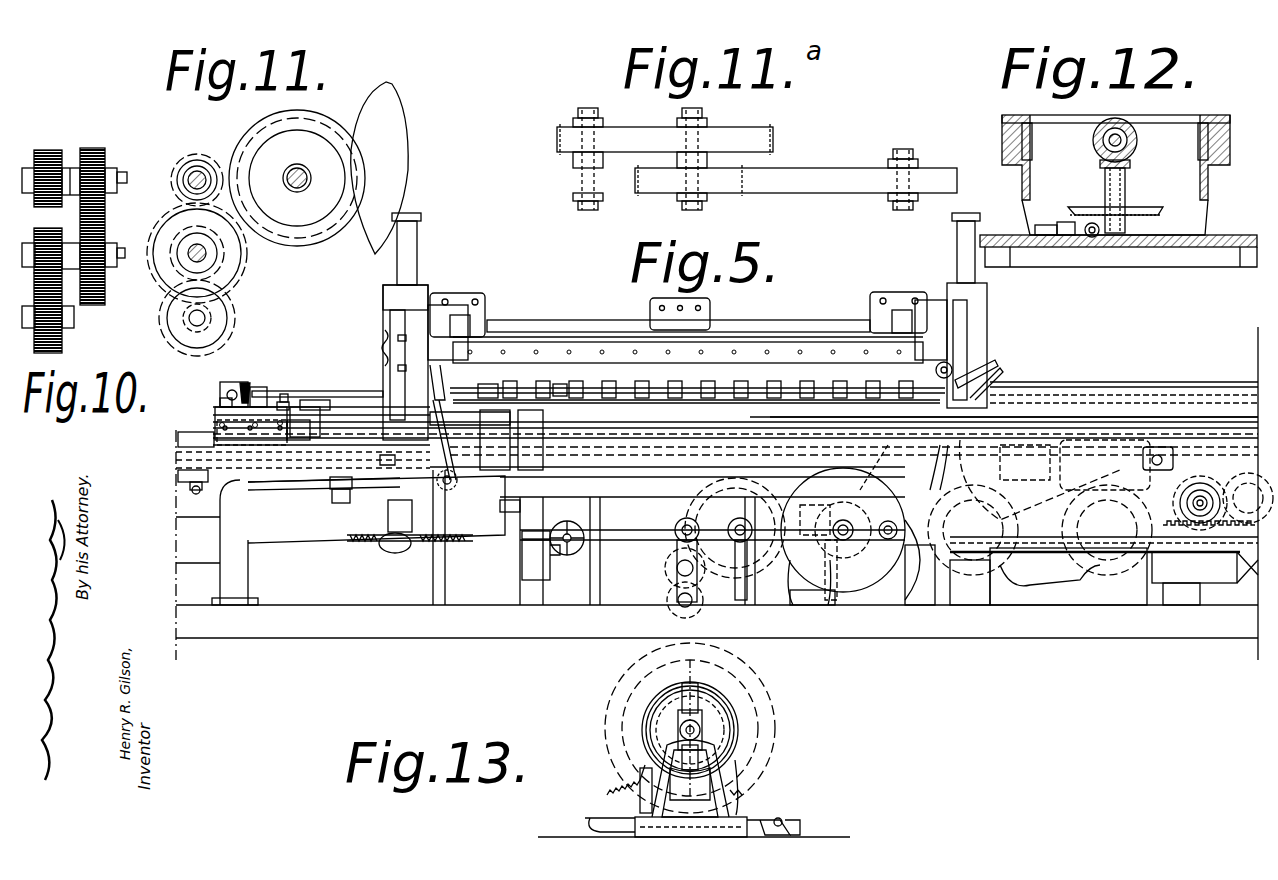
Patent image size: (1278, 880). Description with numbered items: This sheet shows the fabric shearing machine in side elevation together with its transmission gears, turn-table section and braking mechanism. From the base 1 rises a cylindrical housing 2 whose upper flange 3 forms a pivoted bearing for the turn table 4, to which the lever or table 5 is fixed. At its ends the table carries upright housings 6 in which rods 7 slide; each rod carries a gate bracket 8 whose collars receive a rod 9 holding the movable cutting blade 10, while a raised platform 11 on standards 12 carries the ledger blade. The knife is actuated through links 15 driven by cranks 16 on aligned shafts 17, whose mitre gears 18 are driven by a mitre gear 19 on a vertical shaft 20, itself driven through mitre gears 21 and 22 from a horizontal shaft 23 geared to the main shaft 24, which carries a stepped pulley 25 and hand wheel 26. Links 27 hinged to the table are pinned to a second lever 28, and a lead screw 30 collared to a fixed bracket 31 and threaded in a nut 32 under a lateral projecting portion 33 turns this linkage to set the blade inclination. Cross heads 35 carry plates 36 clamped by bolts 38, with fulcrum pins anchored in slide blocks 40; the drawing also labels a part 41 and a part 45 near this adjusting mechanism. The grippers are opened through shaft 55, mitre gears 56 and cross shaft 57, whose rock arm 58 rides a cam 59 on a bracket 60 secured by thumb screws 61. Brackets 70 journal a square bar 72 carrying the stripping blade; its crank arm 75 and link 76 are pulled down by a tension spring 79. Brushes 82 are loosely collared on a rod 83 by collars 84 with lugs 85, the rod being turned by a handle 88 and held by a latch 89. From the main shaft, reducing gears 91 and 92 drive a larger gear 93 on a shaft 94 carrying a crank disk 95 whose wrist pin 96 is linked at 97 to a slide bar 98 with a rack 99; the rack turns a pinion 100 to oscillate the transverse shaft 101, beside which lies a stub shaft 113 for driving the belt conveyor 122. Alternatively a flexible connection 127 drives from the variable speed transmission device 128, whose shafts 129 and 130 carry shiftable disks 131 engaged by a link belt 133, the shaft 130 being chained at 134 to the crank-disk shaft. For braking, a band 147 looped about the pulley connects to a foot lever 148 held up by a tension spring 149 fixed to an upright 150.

In FIG. 5, the base 1 is at (446, 630).
In FIG. 12, the cylindrical housing 2 is at (1215, 205).
In FIG. 5, the cylindrical housing 2 is at (795, 600).
In FIG. 12, the horizontal upper flange 3 is at (1225, 163).
In FIG. 5, the horizontal upper flange 3 is at (634, 528).
In FIG. 12, the turn table 4 is at (1032, 158).
In FIG. 12, the lever or table 5 is at (1220, 116).
In FIG. 5, the lever or table 5 is at (667, 536).
In FIG. 5, the upright housings 6 is at (388, 298).
In FIG. 5, the rods 7 is at (410, 213).
In FIG. 5, the gate bracket 8 is at (444, 335).
In FIG. 5, the rod 9 is at (548, 320).
In FIG. 5, the movable or cutting blade 10 is at (775, 345).
In FIG. 5, the raised platform 11 is at (696, 410).
In FIG. 5, the standards 12 is at (544, 458).
In FIG. 5, the links 15 is at (438, 380).
In FIG. 5, the cranks 16 is at (440, 545).
In FIG. 12, the aligned shafts 17 is at (1122, 140).
In FIG. 5, the aligned shafts 17 is at (512, 505).
In FIG. 12, the mitre gears 18 is at (1120, 128).
In FIG. 12, the mitre gear 19 is at (1132, 163).
In FIG. 12, the vertical shaft 20 is at (1126, 190).
In FIG. 12, the mitre gear 21 is at (1160, 209).
In FIG. 12, the mitre gear 22 is at (1063, 237).
In FIG. 10, the horizontal shaft 23 is at (75, 318).
In FIG. 11, the horizontal shaft 23 is at (192, 322).
In FIG. 12, the horizontal shaft 23 is at (1094, 238).
In FIG. 5, the horizontal shaft 23 is at (680, 605).
In FIG. 10, the main shaft 24 is at (120, 175).
In FIG. 11, the main shaft 24 is at (198, 175).
In FIG. 11A, the main shaft 24 is at (583, 208).
In FIG. 5, the main shaft 24 is at (690, 518).
In FIG. 13, the main shaft 24 is at (702, 720).
In FIG. 13, the stepped pulley 25 is at (727, 762).
In FIG. 13, the hand wheel 26 is at (630, 685).
In FIG. 5, the links 27 is at (302, 468).
In FIG. 5, the second lever 28 is at (270, 522).
In FIG. 5, the lead screw 30 is at (418, 545).
In FIG. 5, the fixed bracket 31 is at (533, 578).
In FIG. 5, the nut 32 is at (390, 552).
In FIG. 5, the lateral projecting portion 33 is at (388, 525).
In FIG. 5, the cross heads 35 is at (320, 400).
In FIG. 5, the plate 36 is at (300, 400).
In FIG. 5, the bolts 38 is at (283, 390).
In FIG. 5, the slide blocks 40 is at (248, 445).
In FIG. 5, the plate 41 is at (178, 428).
In FIG. 5, the lever 45 is at (462, 385).
In FIG. 5, the shaft 55 is at (355, 390).
In FIG. 5, the mitre gears 56 is at (243, 382).
In FIG. 5, the cross shaft 57 is at (226, 388).
In FIG. 5, the rock arm 58 is at (220, 400).
In FIG. 5, the cam 59 is at (215, 412).
In FIG. 5, the bracket 60 is at (212, 490).
In FIG. 5, the thumb screws 61 is at (192, 492).
In FIG. 5, the brackets 70 is at (495, 440).
In FIG. 5, the square bar 72 is at (512, 413).
In FIG. 5, the crank arm 75 is at (405, 362).
In FIG. 5, the link 76 is at (450, 440).
In FIG. 5, the tension spring 79 is at (458, 484).
In FIG. 5, the combs or brushes 82 is at (598, 382).
In FIG. 5, the rod 83 is at (718, 388).
In FIG. 5, the loose collars 84 is at (748, 393).
In FIG. 5, the overhanging lugs 85 is at (535, 380).
In FIG. 5, the handle 88 is at (985, 360).
In FIG. 5, the spring operated latch 89 is at (958, 365).
In FIG. 11, the reducing gear 91 is at (325, 240).
In FIG. 11A, the reducing gear 91 is at (752, 130).
In FIG. 5, the reducing gear 91 is at (748, 470).
In FIG. 11, the reducing gear 92 is at (300, 218).
In FIG. 11A, the reducing gear 92 is at (727, 185).
In FIG. 5, the reducing gear 92 is at (735, 539).
In FIG. 11, the larger gear 93 is at (400, 160).
In FIG. 11A, the larger gear 93 is at (840, 168).
In FIG. 5, the larger gear 93 is at (904, 592).
In FIG. 11A, the shaft 94 is at (900, 150).
In FIG. 5, the shaft 94 is at (843, 520).
In FIG. 5, the crank disk 95 is at (828, 590).
In FIG. 5, the wrist pin 96 is at (888, 540).
In FIG. 5, the link 97 is at (1040, 540).
In FIG. 5, the slide bar 98 is at (1125, 580).
In FIG. 5, the rack 99 is at (1195, 535).
In FIG. 5, the pinion 100 is at (1203, 498).
In FIG. 5, the transverse shaft 101 is at (1218, 530).
In FIG. 5, the stub shaft 113 is at (1248, 479).
In FIG. 5, the belt conveyor 122 is at (1105, 465).
In FIG. 5, the flexible connection 127 is at (1107, 530).
In FIG. 5, the variable speed transmission device 128 is at (1063, 585).
In FIG. 5, the shaft 129 is at (1118, 420).
In FIG. 5, the shaft 130 is at (975, 590).
In FIG. 5, the shiftable disks 131 is at (1040, 480).
In FIG. 5, the flexible link belt 133 is at (1072, 575).
In FIG. 5, the chain and sprocket 134 is at (900, 425).
In FIG. 5, the band 147 is at (305, 400).
In FIG. 13, the band 147 is at (717, 735).
In FIG. 13, the foot lever 148 is at (590, 815).
In FIG. 13, the tension spring 149 is at (620, 790).
In FIG. 13, the upright 150 is at (640, 770).